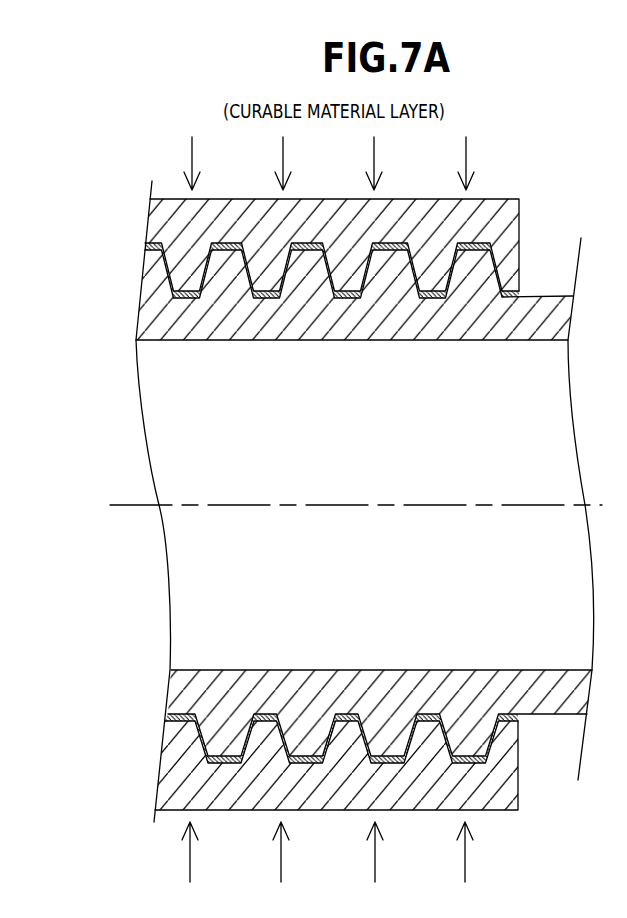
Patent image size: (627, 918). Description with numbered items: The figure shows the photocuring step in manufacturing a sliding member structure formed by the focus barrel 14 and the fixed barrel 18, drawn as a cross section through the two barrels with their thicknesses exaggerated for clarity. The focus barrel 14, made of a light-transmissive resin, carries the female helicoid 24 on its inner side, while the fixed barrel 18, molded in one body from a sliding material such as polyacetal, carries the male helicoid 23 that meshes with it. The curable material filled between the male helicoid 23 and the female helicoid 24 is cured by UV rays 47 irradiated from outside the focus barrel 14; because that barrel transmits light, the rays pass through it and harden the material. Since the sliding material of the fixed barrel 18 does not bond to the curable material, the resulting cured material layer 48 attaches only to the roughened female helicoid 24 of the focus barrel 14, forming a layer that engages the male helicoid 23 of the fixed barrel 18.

The focus barrel 14 is at (437, 199).
The fixed barrel 18 is at (467, 322).
The male helicoid 23 is at (332, 280).
The female helicoid 24 is at (209, 262).
The UV rays 47 is at (194, 151).
The cured material layer 48 is at (310, 247).